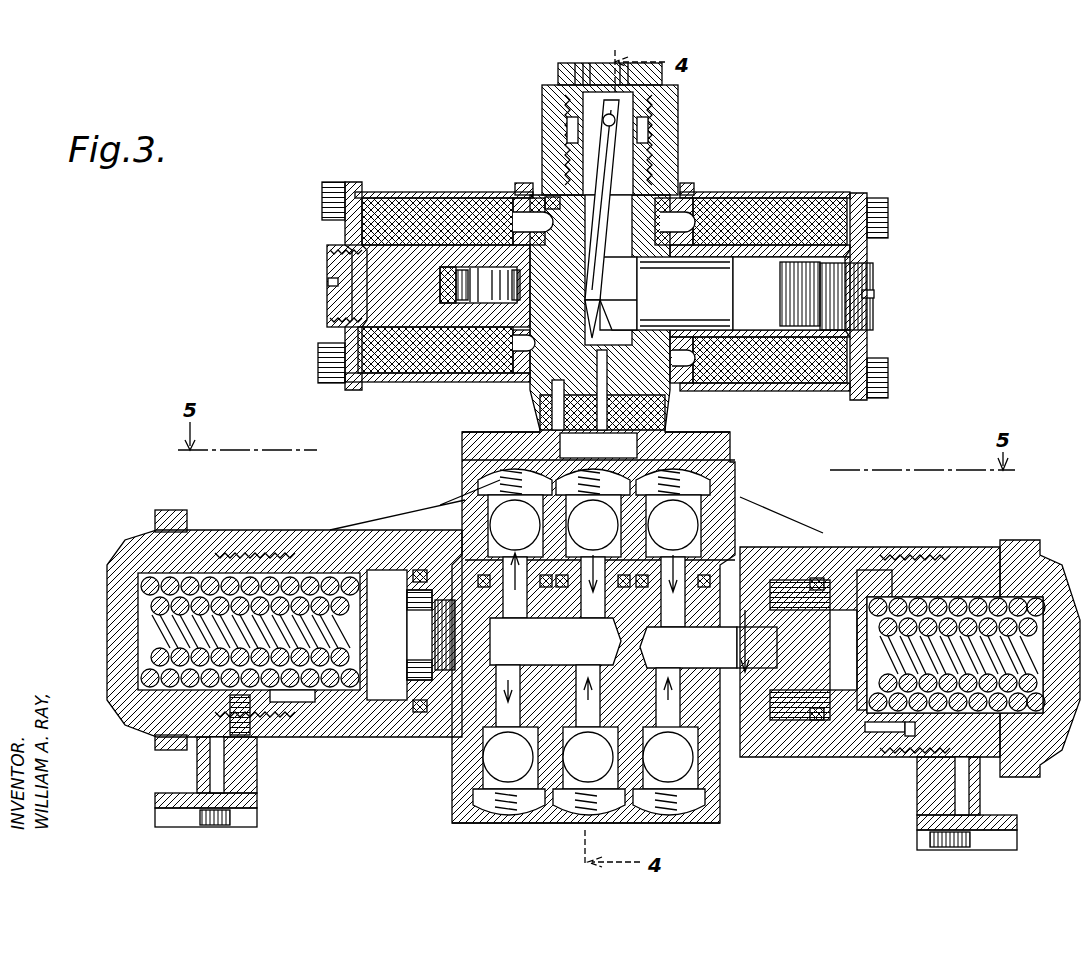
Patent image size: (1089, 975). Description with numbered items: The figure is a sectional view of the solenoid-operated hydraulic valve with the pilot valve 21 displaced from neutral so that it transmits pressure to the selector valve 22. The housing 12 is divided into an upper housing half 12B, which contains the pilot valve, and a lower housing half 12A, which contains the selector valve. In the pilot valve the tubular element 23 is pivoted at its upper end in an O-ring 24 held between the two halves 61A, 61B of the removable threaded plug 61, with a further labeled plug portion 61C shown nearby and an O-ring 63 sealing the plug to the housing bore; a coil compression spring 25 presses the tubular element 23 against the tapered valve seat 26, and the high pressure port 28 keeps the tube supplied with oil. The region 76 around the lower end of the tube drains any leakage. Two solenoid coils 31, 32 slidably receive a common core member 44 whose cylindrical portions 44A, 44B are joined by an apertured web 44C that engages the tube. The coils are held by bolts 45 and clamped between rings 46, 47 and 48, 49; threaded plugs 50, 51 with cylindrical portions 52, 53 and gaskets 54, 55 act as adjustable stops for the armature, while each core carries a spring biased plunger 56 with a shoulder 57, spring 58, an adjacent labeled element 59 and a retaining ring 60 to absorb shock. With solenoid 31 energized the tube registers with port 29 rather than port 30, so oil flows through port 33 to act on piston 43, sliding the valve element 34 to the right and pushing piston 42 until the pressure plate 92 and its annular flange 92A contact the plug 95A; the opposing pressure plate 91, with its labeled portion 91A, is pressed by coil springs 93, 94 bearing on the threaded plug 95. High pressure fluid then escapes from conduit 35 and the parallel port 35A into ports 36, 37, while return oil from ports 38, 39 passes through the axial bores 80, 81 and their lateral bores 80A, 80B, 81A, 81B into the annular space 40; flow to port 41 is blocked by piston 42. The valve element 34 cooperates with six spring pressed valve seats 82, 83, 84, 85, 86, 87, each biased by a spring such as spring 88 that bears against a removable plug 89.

The housing 12 is at (939, 422).
The lower housing half 12A is at (735, 475).
The upper housing half 12B is at (730, 440).
The pilot valve 21 is at (753, 207).
The selector valve 22 is at (832, 538).
The tubular element 23 is at (580, 183).
The O-ring 24 is at (575, 140).
The coil compression spring 25 is at (612, 270).
The valve seat 26 is at (548, 418).
The high pressure port 28 is at (648, 130).
The port 29 is at (548, 398).
The port 30 is at (650, 385).
The solenoid 31 is at (403, 200).
The solenoid 32 is at (782, 215).
The port 33 is at (303, 560).
The valve element 34 is at (468, 618).
The high pressure conduit 35 is at (593, 556).
The port 35A is at (590, 758).
The port 36 is at (515, 556).
The port 37 is at (510, 758).
The port 38 is at (673, 561).
The port 39 is at (670, 758).
The annular space 40 is at (773, 595).
The port 41 is at (880, 592).
The piston 42 is at (853, 585).
The piston 43 is at (410, 560).
The core member 44 is at (692, 235).
The cylindrical portion 44A is at (490, 218).
The cylindrical portion 44B is at (685, 293).
The web portion 44C is at (623, 283).
The bolt 45 is at (322, 192).
The ring 46 is at (352, 182).
The ring 47 is at (525, 190).
The ring 48 is at (692, 200).
The ring 49 is at (860, 192).
The threaded plug 50 is at (327, 265).
The threaded plug 51 is at (870, 313).
The cylindrical portion 52 is at (392, 215).
The cylindrical portion 53 is at (835, 272).
The annular gasket 54 is at (440, 220).
The annular gasket 55 is at (805, 240).
The spring biased plunger 56 is at (742, 297).
The annular shoulder 57 is at (470, 305).
The coil compression spring 58 is at (495, 305).
The pole piece 59 is at (455, 220).
The annular retaining ring 60 is at (432, 320).
The threaded removable plug 61 is at (665, 84).
The plug half 61A is at (558, 70).
The plug half 61B is at (635, 165).
The plunger tip 61C is at (620, 178).
The O-ring 63 is at (565, 195).
The region 76 is at (620, 322).
The bore 80 is at (688, 647).
The lateral bore 80A is at (757, 641).
The lateral bore 80B is at (691, 683).
The bore 81 is at (555, 641).
The lateral bore 81A is at (604, 662).
The lateral bore 81B is at (515, 662).
The valve seat 82 is at (485, 492).
The valve seat 83 is at (548, 808).
The valve seat 84 is at (598, 445).
The valve seat 85 is at (610, 808).
The valve seat 86 is at (700, 492).
The valve seat 87 is at (700, 787).
The coil compression spring 88 is at (483, 478).
The removable plug 89 is at (505, 455).
The pressure plate 91 is at (348, 712).
The port 91A is at (313, 712).
The pressure plate 92 is at (895, 718).
The annular flange 92A is at (912, 710).
The coil compression spring 93 is at (135, 667).
The coil compression spring 94 is at (135, 598).
The threaded retaining plug 95 is at (160, 524).
The plug 95A is at (1020, 542).